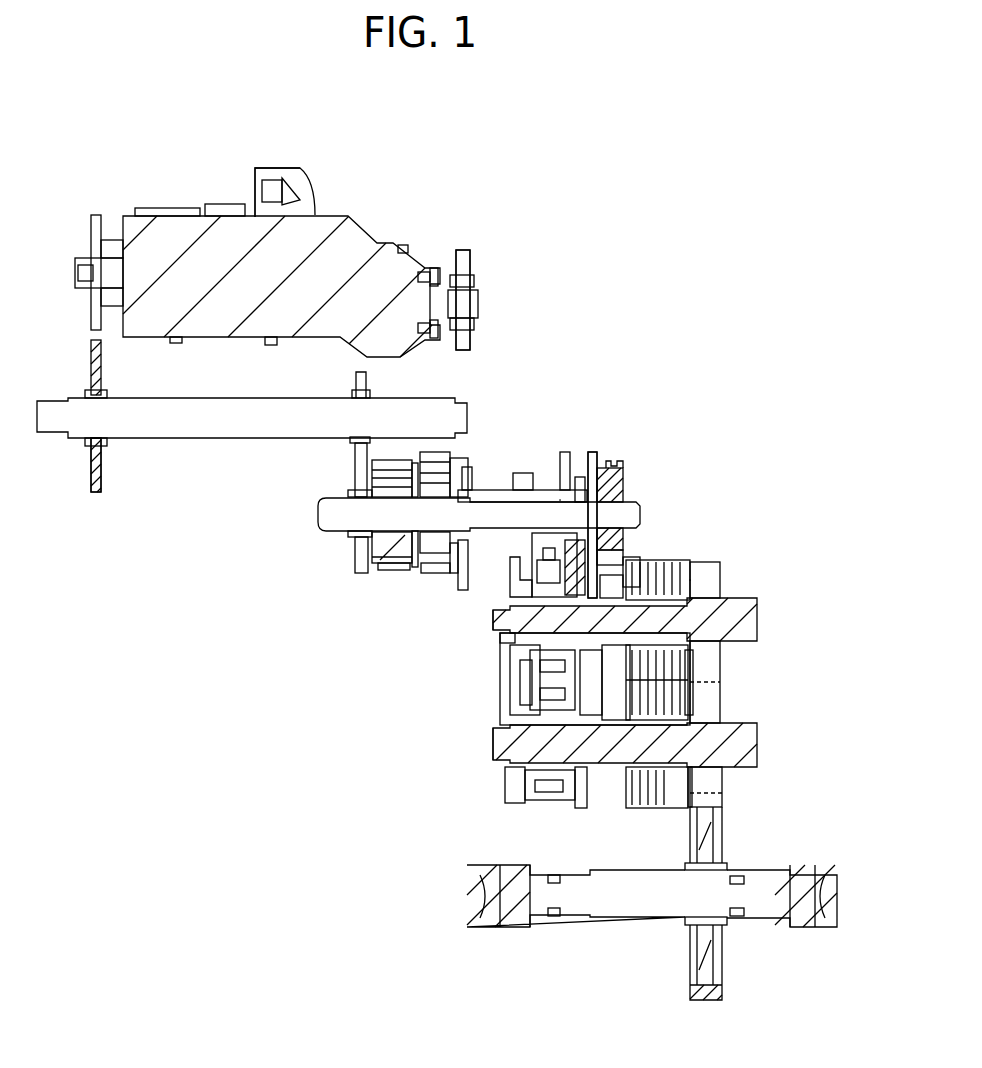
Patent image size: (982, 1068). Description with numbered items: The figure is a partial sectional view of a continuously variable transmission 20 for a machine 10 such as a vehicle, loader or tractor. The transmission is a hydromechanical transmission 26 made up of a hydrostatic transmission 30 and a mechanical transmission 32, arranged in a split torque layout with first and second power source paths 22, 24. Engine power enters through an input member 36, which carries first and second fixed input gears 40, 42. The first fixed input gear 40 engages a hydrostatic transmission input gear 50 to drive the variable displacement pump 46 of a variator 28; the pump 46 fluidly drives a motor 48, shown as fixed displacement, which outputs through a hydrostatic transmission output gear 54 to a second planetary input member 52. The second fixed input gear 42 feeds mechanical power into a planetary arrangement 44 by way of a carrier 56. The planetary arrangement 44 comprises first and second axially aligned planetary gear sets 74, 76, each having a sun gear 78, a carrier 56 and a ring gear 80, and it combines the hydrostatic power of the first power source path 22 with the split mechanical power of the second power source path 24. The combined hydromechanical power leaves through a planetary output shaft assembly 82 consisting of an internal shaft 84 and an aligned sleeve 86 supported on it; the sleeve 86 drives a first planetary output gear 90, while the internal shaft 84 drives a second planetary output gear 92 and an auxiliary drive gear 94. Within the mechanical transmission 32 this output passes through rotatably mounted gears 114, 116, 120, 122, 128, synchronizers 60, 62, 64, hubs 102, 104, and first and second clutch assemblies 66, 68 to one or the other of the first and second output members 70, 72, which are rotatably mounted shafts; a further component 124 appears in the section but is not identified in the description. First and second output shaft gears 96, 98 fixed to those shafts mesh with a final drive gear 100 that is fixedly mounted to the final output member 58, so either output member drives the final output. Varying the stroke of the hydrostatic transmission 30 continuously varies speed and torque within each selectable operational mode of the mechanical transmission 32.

The machine 10 is at (652, 206).
The continuously variable transmission 20 is at (532, 206).
The first power source path 22 is at (345, 190).
The second power source path 24 is at (165, 458).
The hydromechanical transmission 26 is at (75, 348).
The variator 28 is at (374, 180).
The hydrostatic transmission 30 is at (440, 228).
The mechanical transmission 32 is at (795, 731).
The input member 36 is at (60, 436).
The first fixed input gear 40 is at (86, 476).
The second fixed input gear 42 is at (368, 386).
The planetary arrangement 44 is at (375, 648).
The variable displacement pump 46 is at (190, 214).
The motor 48 is at (392, 248).
The hydrostatic transmission input gear 50 is at (88, 216).
The second planetary input member 52 is at (432, 476).
The hydrostatic transmission output gear 54 is at (470, 260).
The carrier 56 is at (450, 473).
The final output member 58 is at (835, 923).
The synchronizer 60 is at (556, 573).
The synchronizer 62 is at (540, 798).
The synchronizer 64 is at (626, 470).
The first clutch assembly 66 is at (690, 548).
The second clutch assembly 68 is at (625, 810).
The first output member 70 is at (493, 623).
The second output member 72 is at (500, 740).
The first planetary gear set 74 is at (368, 573).
The second planetary gear set 76 is at (412, 576).
The sun gear 78 is at (318, 516).
The ring gear 80 is at (452, 578).
The planetary output shaft assembly 82 is at (590, 420).
The internal shaft 84 is at (626, 510).
The sleeve 86 is at (478, 483).
The first planetary output gear 90 is at (525, 473).
The second planetary output gear 92 is at (568, 450).
The auxiliary drive gear 94 is at (600, 453).
The first output shaft gear 96 is at (722, 578).
The second output shaft gear 98 is at (722, 698).
The final drive gear 100 is at (722, 828).
The hub 102 is at (605, 682).
The hub 104 is at (638, 788).
The gear 114 is at (525, 676).
The gear 116 is at (512, 800).
The gear 120 is at (525, 698).
The gear 122 is at (575, 808).
The housing 124 is at (500, 646).
The gear 128 is at (600, 570).